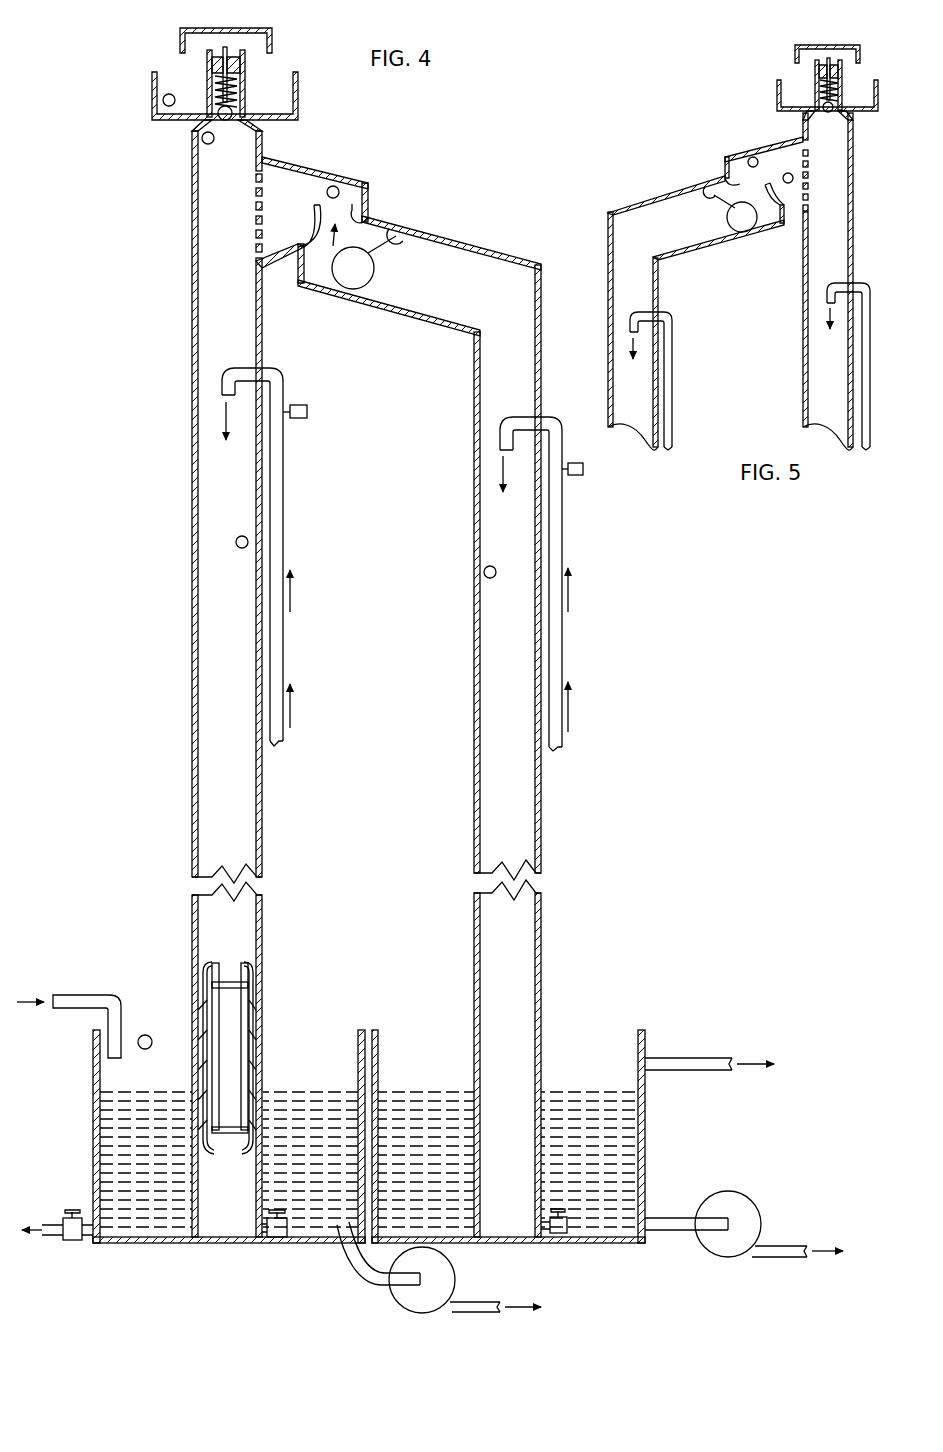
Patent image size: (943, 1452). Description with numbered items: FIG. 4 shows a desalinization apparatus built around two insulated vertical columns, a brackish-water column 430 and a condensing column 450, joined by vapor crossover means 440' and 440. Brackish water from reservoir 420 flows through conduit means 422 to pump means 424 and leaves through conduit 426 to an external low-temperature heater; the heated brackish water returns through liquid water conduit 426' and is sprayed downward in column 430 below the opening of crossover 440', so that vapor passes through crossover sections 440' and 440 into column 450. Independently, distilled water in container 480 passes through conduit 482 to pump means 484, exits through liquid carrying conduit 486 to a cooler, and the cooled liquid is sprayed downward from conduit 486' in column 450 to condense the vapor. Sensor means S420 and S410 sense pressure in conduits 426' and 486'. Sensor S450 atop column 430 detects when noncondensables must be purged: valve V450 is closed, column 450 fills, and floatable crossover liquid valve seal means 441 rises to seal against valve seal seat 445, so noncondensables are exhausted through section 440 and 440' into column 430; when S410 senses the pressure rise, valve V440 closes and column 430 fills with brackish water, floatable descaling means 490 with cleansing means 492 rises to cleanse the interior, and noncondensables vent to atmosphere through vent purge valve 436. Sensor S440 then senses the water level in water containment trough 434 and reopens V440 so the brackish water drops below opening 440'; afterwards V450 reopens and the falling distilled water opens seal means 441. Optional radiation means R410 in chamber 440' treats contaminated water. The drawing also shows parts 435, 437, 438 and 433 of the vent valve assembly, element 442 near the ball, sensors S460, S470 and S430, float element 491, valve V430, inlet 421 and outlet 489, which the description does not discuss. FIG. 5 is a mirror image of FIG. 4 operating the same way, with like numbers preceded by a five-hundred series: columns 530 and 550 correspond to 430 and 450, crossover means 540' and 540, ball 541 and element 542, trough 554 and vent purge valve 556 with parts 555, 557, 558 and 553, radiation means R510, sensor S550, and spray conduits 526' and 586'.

In FIG. 4, the cap 435 is at (180, 34).
In FIG. 4, the water containment trough 434 is at (298, 87).
In FIG. 4, the valve stem 437 is at (232, 80).
In FIG. 4, the wedge 438 is at (212, 68).
In FIG. 4, the spring 433 is at (247, 83).
In FIG. 4, the vent purge valve 436 is at (230, 118).
In FIG. 4, the sensor S440 is at (163, 100).
In FIG. 4, the sensor S450 is at (202, 138).
In FIG. 4, the vertical column 430 is at (252, 341).
In FIG. 4, the vapor crossover means 440' is at (281, 213).
In FIG. 4, the vapor crossover means 440 is at (398, 246).
In FIG. 4, the radiation means R410 is at (337, 186).
In FIG. 4, the valve seal seat 445 is at (300, 250).
In FIG. 4, the floatable crossover liquid valve seal means 441 is at (348, 286).
In FIG. 4, the link 442 is at (398, 230).
In FIG. 4, the liquid water conduit 426' is at (278, 557).
In FIG. 4, the sensor means S420 is at (307, 412).
In FIG. 4, the sensor S460 is at (248, 542).
In FIG. 4, the vertical column 450 is at (527, 721).
In FIG. 4, the sensor S470 is at (484, 572).
In FIG. 4, the conduit 486' is at (557, 584).
In FIG. 4, the sensor means S410 is at (583, 469).
In FIG. 4, the reservoir 420 is at (323, 1082).
In FIG. 4, the container 480 is at (593, 1081).
In FIG. 4, the inlet pipe 421 is at (81, 992).
In FIG. 4, the sensor S430 is at (148, 1034).
In FIG. 4, the cleansing means 492 is at (254, 974).
In FIG. 4, the float 491 is at (232, 964).
In FIG. 4, the floatable descaling means 490 is at (207, 1155).
In FIG. 4, the valve V430 is at (72, 1242).
In FIG. 4, the valve V440 is at (283, 1240).
In FIG. 4, the valve V450 is at (563, 1236).
In FIG. 4, the conduit means 422 is at (372, 1282).
In FIG. 4, the pump means 424 is at (412, 1308).
In FIG. 4, the liquid conduit 426 is at (495, 1295).
In FIG. 4, the conduit 482 is at (688, 1233).
In FIG. 4, the pump means 484 is at (759, 1220).
In FIG. 4, the liquid carrying conduit 486 is at (786, 1268).
In FIG. 4, the overflow pipe 489 is at (716, 1058).
In FIG. 5, the cap 555 is at (837, 45).
In FIG. 5, the water containment trough 554 is at (777, 98).
In FIG. 5, the valve stem 557 is at (840, 80).
In FIG. 5, the wedge 558 is at (818, 72).
In FIG. 5, the spring 553 is at (842, 90).
In FIG. 5, the vent purge valve 556 is at (832, 111).
In FIG. 5, the vertical column 550 is at (853, 411).
In FIG. 5, the vapor crossover means 540' is at (792, 179).
In FIG. 5, the vapor crossover means 540 is at (705, 198).
In FIG. 5, the vertical column 530 is at (658, 411).
In FIG. 5, the floatable crossover liquid valve seal means 541 is at (740, 234).
In FIG. 5, the link 542 is at (706, 190).
In FIG. 5, the radiation means R510 is at (755, 157).
In FIG. 5, the sensor S550 is at (788, 184).
In FIG. 5, the liquid water conduit 526' is at (674, 381).
In FIG. 5, the conduit 586' is at (871, 366).